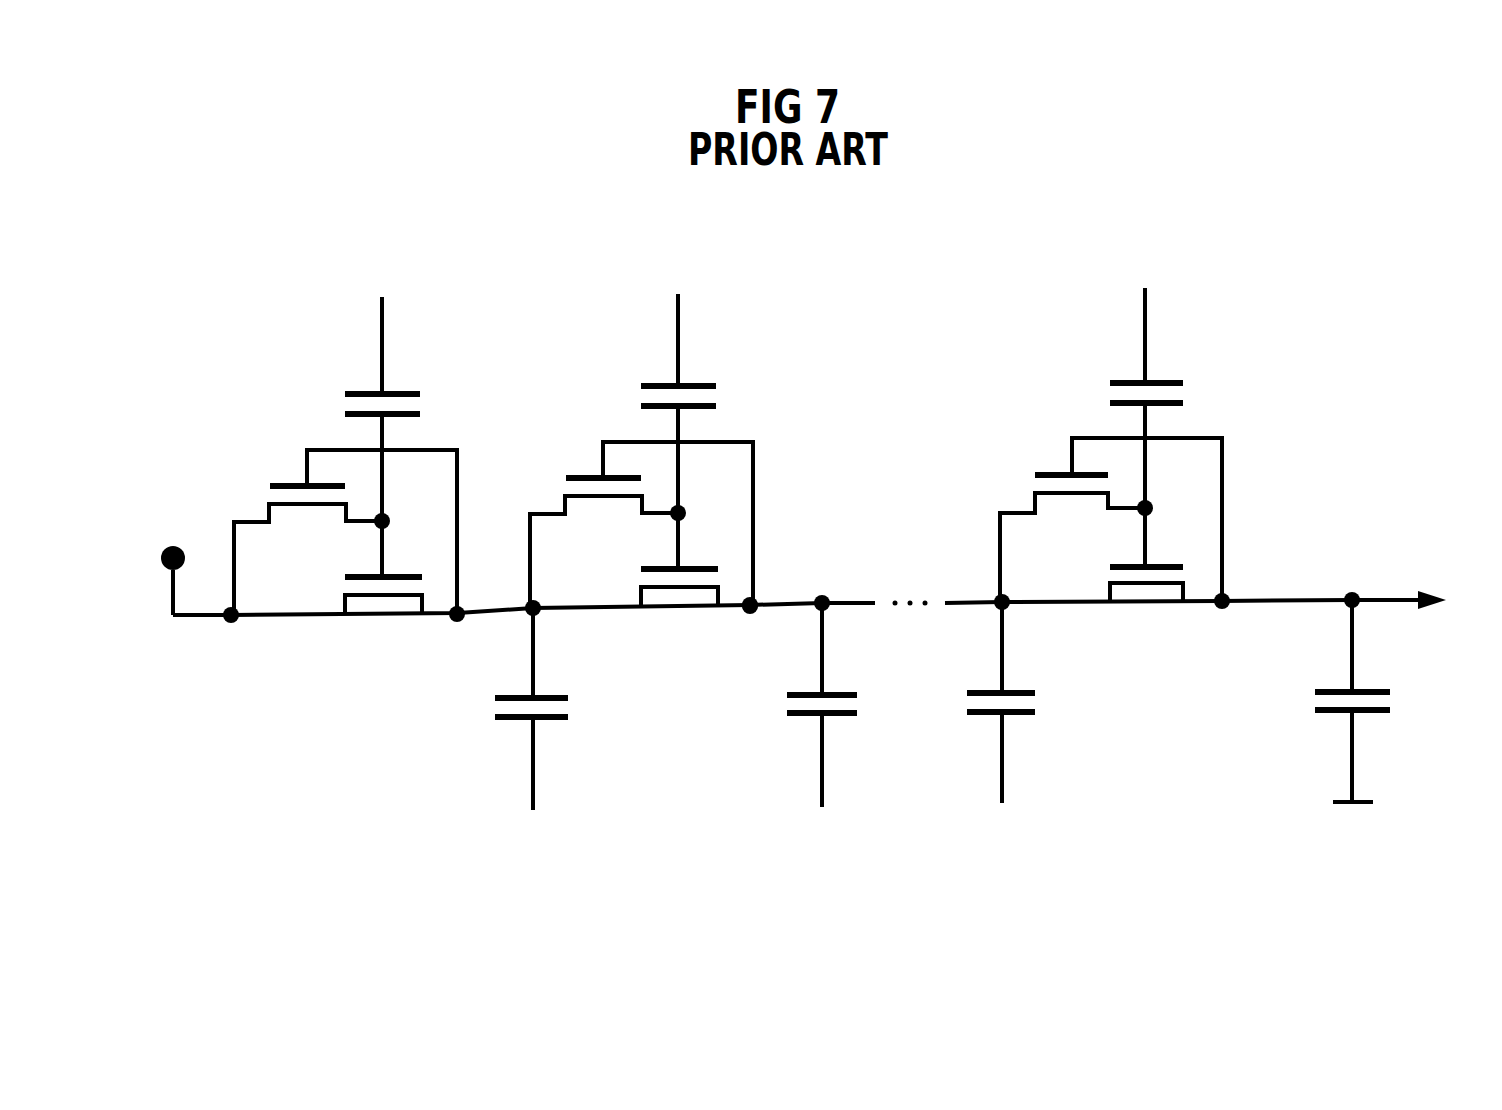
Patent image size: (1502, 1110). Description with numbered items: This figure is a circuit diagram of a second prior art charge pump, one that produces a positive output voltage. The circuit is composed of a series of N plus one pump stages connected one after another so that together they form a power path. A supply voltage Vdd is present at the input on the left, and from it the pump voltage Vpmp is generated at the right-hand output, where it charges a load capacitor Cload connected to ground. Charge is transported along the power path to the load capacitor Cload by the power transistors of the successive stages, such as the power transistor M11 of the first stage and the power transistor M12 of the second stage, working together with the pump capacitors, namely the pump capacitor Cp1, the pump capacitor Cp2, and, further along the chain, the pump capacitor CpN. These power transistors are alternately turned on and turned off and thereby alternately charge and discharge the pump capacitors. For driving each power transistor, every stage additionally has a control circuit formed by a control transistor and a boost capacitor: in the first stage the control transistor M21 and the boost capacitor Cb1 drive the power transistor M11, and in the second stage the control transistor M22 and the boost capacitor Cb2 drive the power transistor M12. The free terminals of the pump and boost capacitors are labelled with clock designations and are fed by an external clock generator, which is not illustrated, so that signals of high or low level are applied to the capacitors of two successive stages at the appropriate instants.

The supply voltage Vdd is at (194, 563).
The boost capacitor Cb1 is at (416, 417).
The control transistor M21 is at (345, 532).
The power transistor M11 is at (405, 612).
The boost capacitor Cb2 is at (711, 411).
The control transistor M22 is at (641, 524).
The power transistor M12 is at (699, 608).
The pump capacitor Cp1 is at (566, 723).
The pump capacitor Cp2 is at (834, 719).
The pump capacitor CpN is at (1038, 719).
The load capacitor Cload is at (1397, 697).
The pump voltage Vpmp is at (1411, 581).